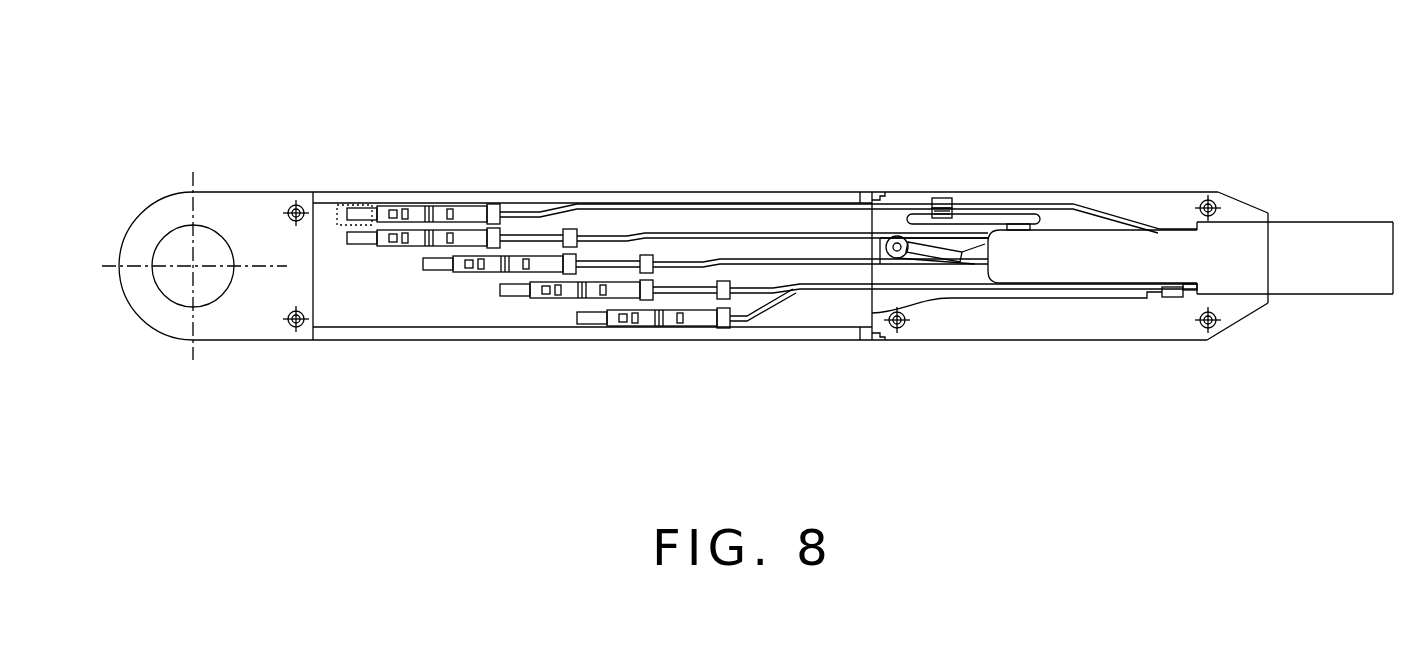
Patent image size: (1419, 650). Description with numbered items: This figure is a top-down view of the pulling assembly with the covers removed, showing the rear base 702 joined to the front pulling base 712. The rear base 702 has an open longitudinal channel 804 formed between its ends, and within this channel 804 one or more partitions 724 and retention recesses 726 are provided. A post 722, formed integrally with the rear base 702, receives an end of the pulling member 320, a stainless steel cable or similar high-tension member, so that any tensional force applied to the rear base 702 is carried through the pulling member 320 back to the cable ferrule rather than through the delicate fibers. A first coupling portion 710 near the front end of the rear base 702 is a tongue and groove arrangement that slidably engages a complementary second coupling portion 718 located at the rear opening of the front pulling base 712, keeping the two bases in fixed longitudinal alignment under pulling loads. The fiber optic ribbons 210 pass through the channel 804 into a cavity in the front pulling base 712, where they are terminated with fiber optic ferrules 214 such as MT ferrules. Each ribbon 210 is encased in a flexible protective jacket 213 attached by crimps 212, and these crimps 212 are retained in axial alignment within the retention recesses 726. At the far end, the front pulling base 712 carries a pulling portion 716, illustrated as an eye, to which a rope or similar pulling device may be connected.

The fiber optic ribbons 210 is at (803, 287).
The crimps 212 is at (943, 198).
The protective jacket 213 is at (1120, 223).
The fiber optic ferrules 214 is at (347, 238).
The pulling member 320 is at (968, 224).
The rear base 702 is at (1131, 332).
The first coupling portion 710 is at (890, 192).
The front pulling base 712 is at (484, 196).
The pulling portion 716 is at (135, 300).
The second coupling portion 718 is at (860, 196).
The post 722 is at (863, 237).
The partitions 724 is at (990, 232).
The retention recesses 726 is at (934, 197).
The open longitudinal channel 804 is at (975, 270).